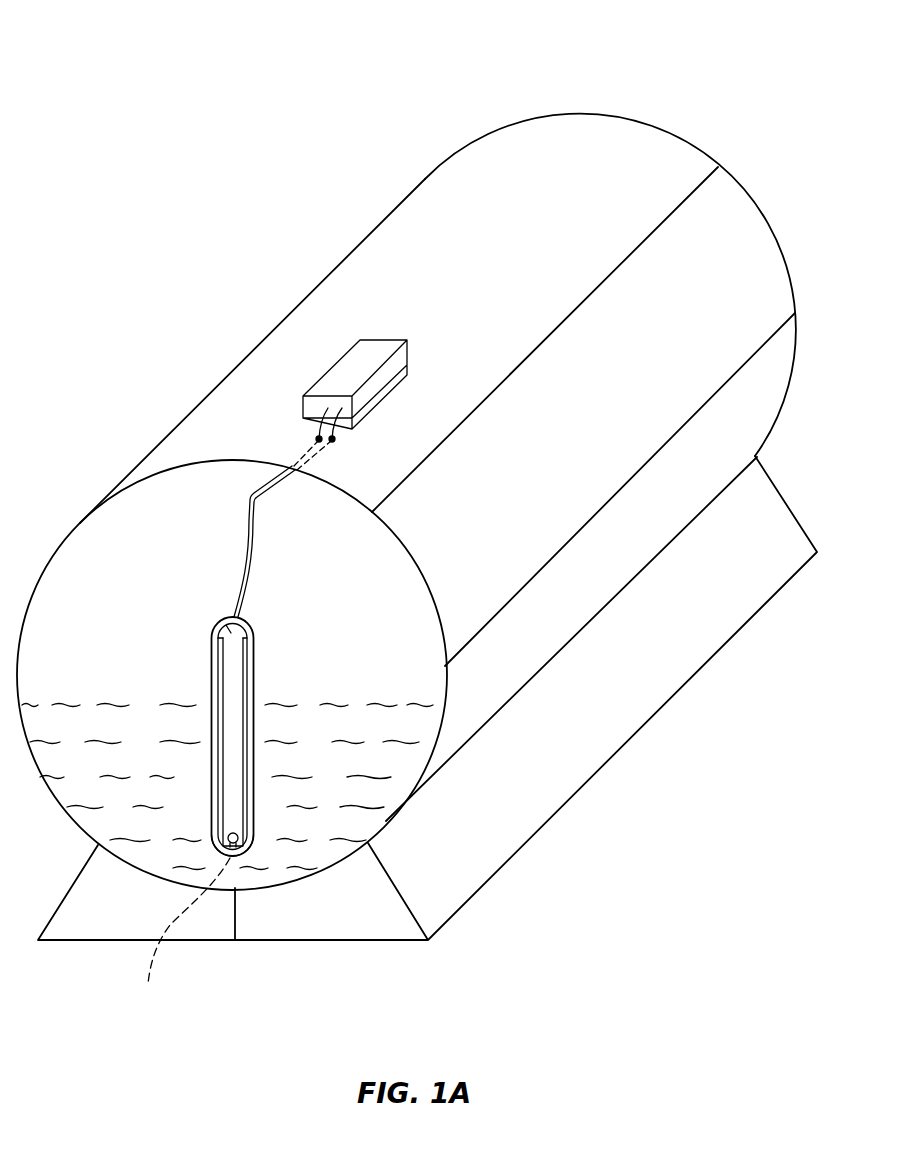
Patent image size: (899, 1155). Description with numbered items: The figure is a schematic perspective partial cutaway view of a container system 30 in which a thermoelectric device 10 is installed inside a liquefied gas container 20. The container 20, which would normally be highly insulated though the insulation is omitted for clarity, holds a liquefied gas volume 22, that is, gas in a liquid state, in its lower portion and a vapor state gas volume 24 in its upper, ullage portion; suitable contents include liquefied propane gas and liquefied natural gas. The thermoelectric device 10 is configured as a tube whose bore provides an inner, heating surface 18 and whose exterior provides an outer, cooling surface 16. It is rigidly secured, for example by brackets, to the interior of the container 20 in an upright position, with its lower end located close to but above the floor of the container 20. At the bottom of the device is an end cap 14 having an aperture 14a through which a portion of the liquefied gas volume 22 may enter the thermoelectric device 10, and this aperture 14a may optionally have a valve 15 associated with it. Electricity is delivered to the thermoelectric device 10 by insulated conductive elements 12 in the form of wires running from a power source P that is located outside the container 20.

The container system 30 is at (417, 475).
The liquefied gas container 20 is at (398, 250).
The power source P is at (378, 352).
The insulated conductive elements 12 is at (258, 526).
The thermoelectric device 10 is at (243, 795).
The outer cooling surface 16 is at (212, 662).
The inner heating surface 18 is at (227, 622).
The valve 15 is at (245, 858).
The end cap 14 is at (257, 851).
The aperture 14a is at (179, 934).
The liquefied gas volume 22 is at (130, 787).
The vapor state gas volume 24 is at (108, 589).